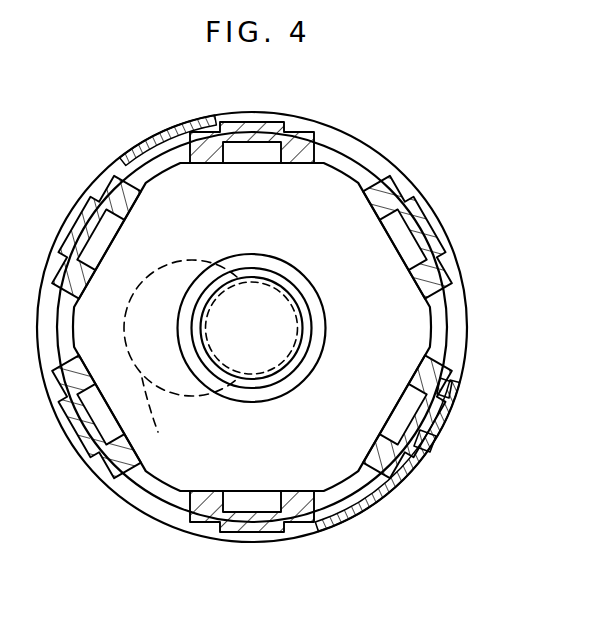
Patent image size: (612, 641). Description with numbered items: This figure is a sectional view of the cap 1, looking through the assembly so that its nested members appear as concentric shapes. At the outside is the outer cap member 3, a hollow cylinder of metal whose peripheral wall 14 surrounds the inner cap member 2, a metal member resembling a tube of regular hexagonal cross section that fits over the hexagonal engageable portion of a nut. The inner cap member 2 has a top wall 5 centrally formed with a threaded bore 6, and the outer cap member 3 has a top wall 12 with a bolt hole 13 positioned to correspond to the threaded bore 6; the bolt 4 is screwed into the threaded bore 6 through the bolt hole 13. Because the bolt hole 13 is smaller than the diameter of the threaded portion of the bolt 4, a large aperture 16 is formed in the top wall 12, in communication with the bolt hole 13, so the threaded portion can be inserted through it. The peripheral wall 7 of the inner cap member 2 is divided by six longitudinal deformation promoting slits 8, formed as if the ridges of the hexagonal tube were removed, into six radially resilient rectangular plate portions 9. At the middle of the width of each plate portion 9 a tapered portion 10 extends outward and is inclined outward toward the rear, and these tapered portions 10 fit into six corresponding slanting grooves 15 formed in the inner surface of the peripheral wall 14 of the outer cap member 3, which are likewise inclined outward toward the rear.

The cap 1 is at (492, 320).
The inner cap member 2 is at (360, 170).
The outer cap member 3 is at (460, 283).
The bolt 4 is at (267, 357).
The top wall 5 is at (307, 193).
The threaded bore 6 is at (290, 294).
The peripheral wall 7 is at (457, 262).
The deformation promoting slits 8 is at (443, 366).
The rectangular plate portions 9 is at (447, 386).
The tapered portion 10 is at (432, 441).
The top wall 12 is at (143, 177).
The bolt hole 13 is at (306, 333).
The peripheral wall 14 is at (147, 510).
The slanting grooves 15 is at (75, 447).
The large aperture 16 is at (192, 359).